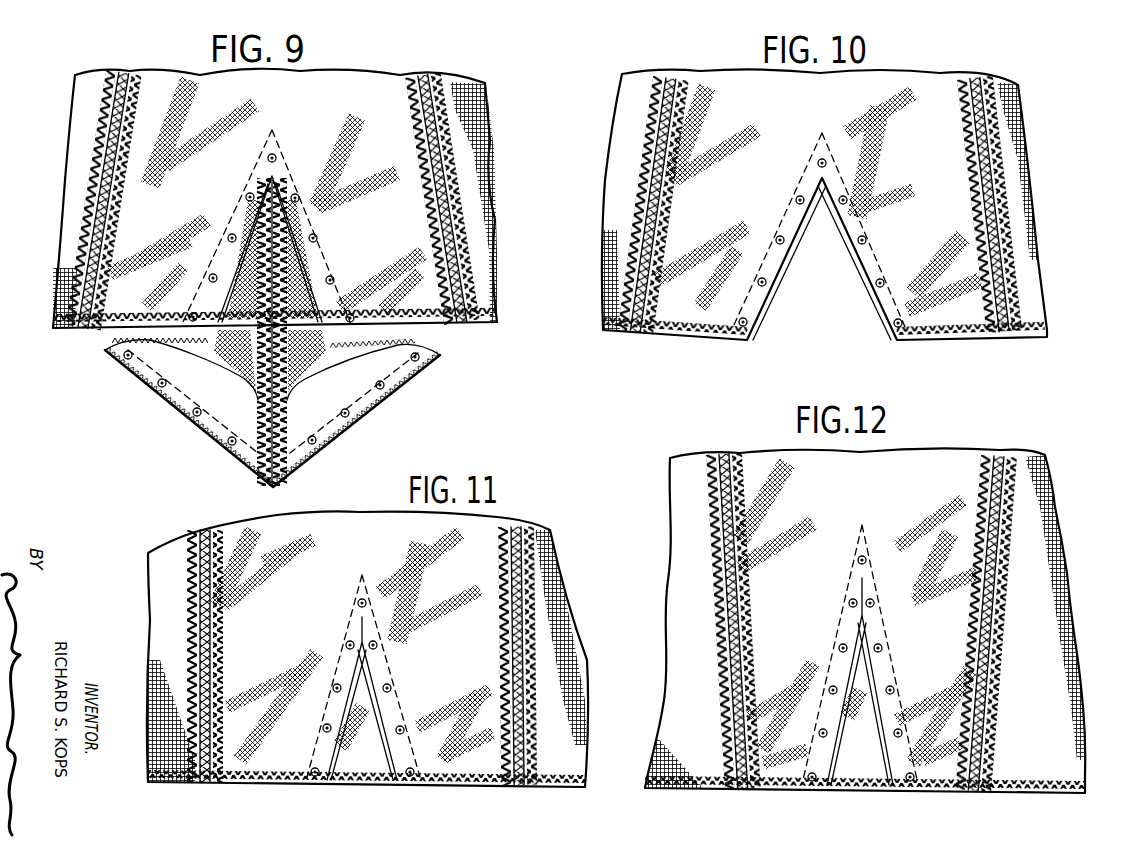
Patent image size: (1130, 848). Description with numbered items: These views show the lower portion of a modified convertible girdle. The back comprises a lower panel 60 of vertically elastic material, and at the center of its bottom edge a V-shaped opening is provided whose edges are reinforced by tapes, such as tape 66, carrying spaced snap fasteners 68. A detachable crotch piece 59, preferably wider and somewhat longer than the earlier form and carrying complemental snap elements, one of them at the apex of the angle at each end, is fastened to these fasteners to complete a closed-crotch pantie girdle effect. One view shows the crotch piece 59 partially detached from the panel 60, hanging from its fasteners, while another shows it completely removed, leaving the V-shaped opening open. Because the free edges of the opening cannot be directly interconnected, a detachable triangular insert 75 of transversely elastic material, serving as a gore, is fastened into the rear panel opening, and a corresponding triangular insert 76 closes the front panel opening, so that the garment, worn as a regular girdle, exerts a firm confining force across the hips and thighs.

In FIG. 9, the lower panel 60 is at (379, 98).
In FIG. 10, the lower panel 60 is at (967, 313).
In FIG. 9, the detachable crotch piece 59 is at (382, 357).
In FIG. 10, the snap fastener 68 is at (866, 240).
In FIG. 10, the tape 66 is at (890, 292).
In FIG. 11, the triangular insert 75 is at (363, 690).
In FIG. 12, the triangular insert 76 is at (862, 675).